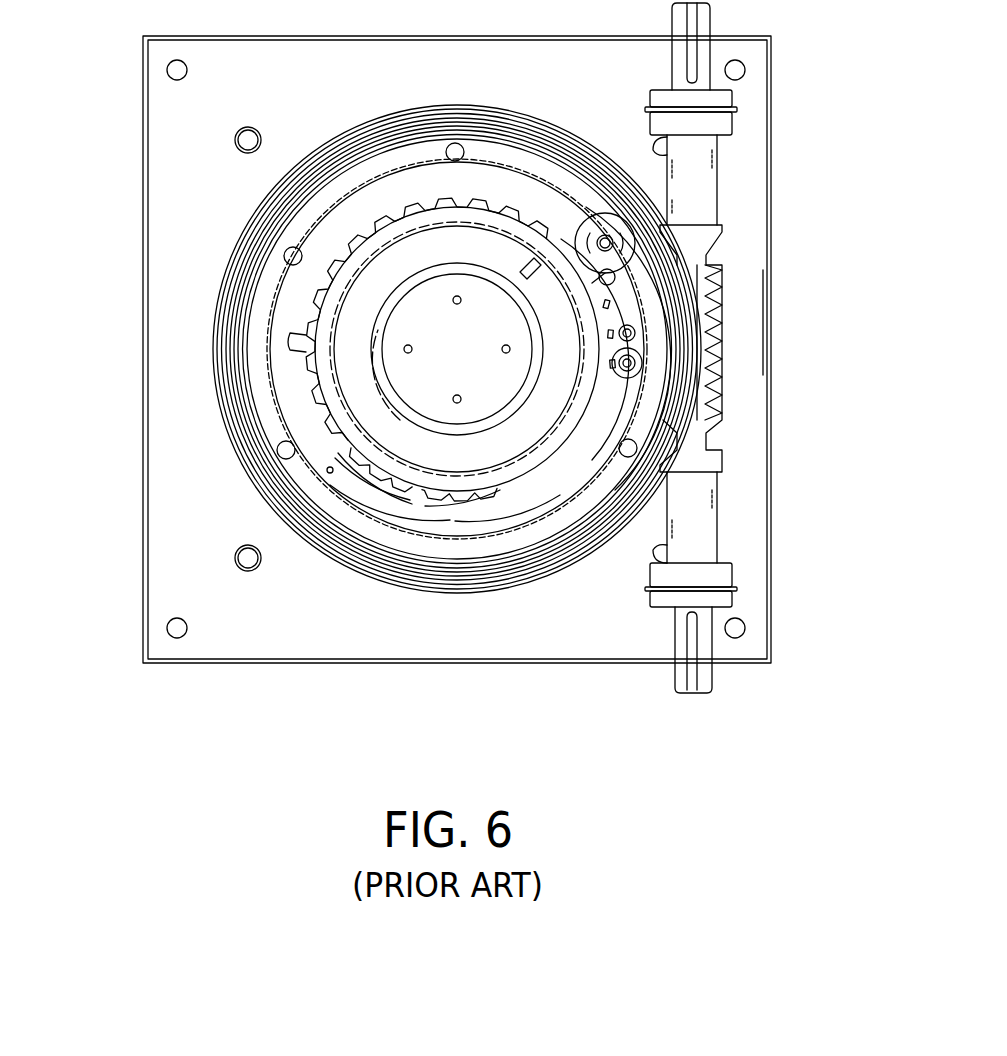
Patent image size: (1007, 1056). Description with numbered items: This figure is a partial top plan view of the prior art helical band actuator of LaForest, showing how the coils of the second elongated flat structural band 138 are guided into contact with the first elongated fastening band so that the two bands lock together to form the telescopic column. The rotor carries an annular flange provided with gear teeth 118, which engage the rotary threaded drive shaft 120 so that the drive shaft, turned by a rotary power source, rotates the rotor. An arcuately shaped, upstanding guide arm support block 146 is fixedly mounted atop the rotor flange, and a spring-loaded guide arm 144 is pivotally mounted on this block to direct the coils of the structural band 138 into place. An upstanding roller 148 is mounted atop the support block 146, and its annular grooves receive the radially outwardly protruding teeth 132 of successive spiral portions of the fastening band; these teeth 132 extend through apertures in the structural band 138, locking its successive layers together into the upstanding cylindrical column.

The gear teeth 118 is at (497, 483).
The rotary threaded drive shaft 120 is at (693, 520).
The radially outwardly protruding teeth 132 is at (412, 490).
The second elongated flat structural band 138 is at (240, 310).
The guide arm 144 is at (450, 513).
The guide arm support block 146 is at (623, 308).
The upstanding roller 148 is at (611, 243).